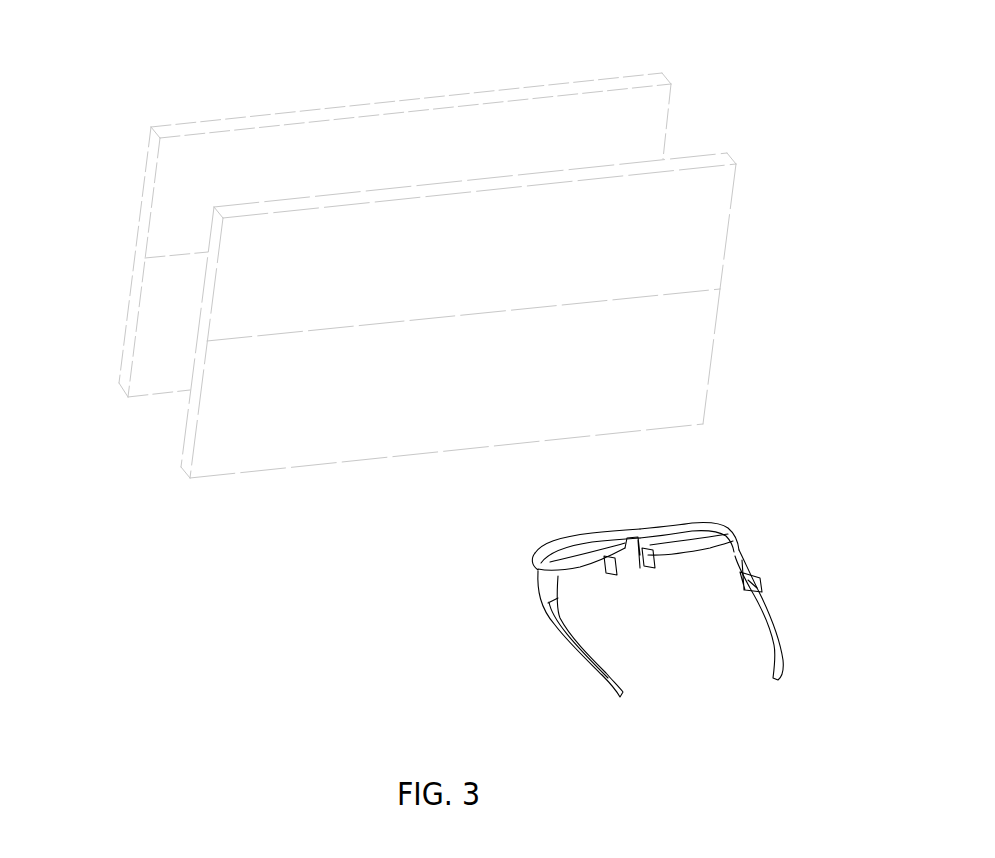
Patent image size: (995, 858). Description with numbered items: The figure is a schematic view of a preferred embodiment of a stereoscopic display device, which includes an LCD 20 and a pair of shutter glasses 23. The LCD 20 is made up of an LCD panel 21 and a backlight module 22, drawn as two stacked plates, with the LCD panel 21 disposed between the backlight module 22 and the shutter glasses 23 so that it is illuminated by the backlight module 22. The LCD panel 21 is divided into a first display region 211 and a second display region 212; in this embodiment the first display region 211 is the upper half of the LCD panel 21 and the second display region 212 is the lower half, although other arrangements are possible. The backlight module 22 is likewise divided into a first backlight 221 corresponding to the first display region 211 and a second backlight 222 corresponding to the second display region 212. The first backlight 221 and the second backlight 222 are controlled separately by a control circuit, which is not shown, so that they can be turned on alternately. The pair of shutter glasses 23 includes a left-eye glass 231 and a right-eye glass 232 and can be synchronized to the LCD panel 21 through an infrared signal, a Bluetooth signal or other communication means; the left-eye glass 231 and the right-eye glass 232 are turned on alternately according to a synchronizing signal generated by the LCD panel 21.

The LCD 20 is at (812, 48).
The LCD panel 21 is at (736, 164).
The first display region 211 is at (673, 255).
The second display region 212 is at (672, 347).
The backlight module 22 is at (671, 84).
The first backlight 221 is at (193, 193).
The second backlight 222 is at (183, 330).
The pair of shutter glasses 23 is at (725, 537).
The left-eye glass 231 is at (580, 535).
The right-eye glass 232 is at (663, 525).